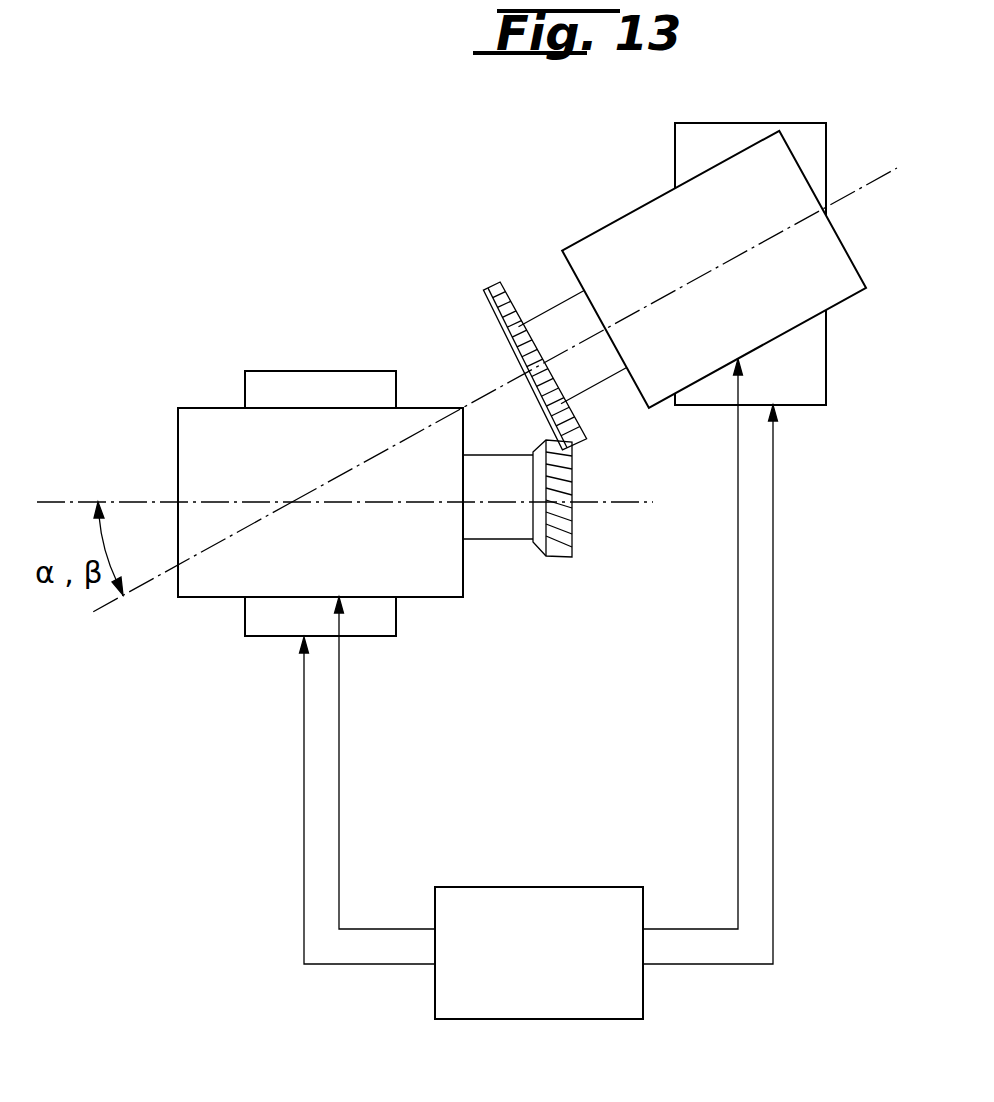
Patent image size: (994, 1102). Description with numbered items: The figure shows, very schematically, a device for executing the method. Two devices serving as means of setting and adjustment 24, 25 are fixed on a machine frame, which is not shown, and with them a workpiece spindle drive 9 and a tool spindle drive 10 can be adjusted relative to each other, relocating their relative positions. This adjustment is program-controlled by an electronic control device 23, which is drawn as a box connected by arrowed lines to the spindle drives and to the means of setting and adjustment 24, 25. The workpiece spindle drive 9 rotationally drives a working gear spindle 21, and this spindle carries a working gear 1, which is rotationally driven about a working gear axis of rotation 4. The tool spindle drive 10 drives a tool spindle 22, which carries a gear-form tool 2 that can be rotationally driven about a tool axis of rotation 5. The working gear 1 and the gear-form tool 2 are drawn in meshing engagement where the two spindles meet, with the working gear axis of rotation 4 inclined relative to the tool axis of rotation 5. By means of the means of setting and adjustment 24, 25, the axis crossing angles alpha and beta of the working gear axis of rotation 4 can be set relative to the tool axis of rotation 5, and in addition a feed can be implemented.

The working gear 1 is at (484, 266).
The gear-form tool 2 is at (562, 572).
The working gear axis of rotation 4 is at (847, 198).
The tool axis of rotation 5 is at (610, 497).
The workpiece spindle drive 9 is at (748, 272).
The tool spindle drive 10 is at (227, 538).
The working gear spindle 21 is at (575, 367).
The tool spindle 22 is at (500, 513).
The electronic control device 23 is at (556, 959).
The means of setting and adjustment 24 is at (313, 383).
The means of setting and adjustment 25 is at (733, 138).